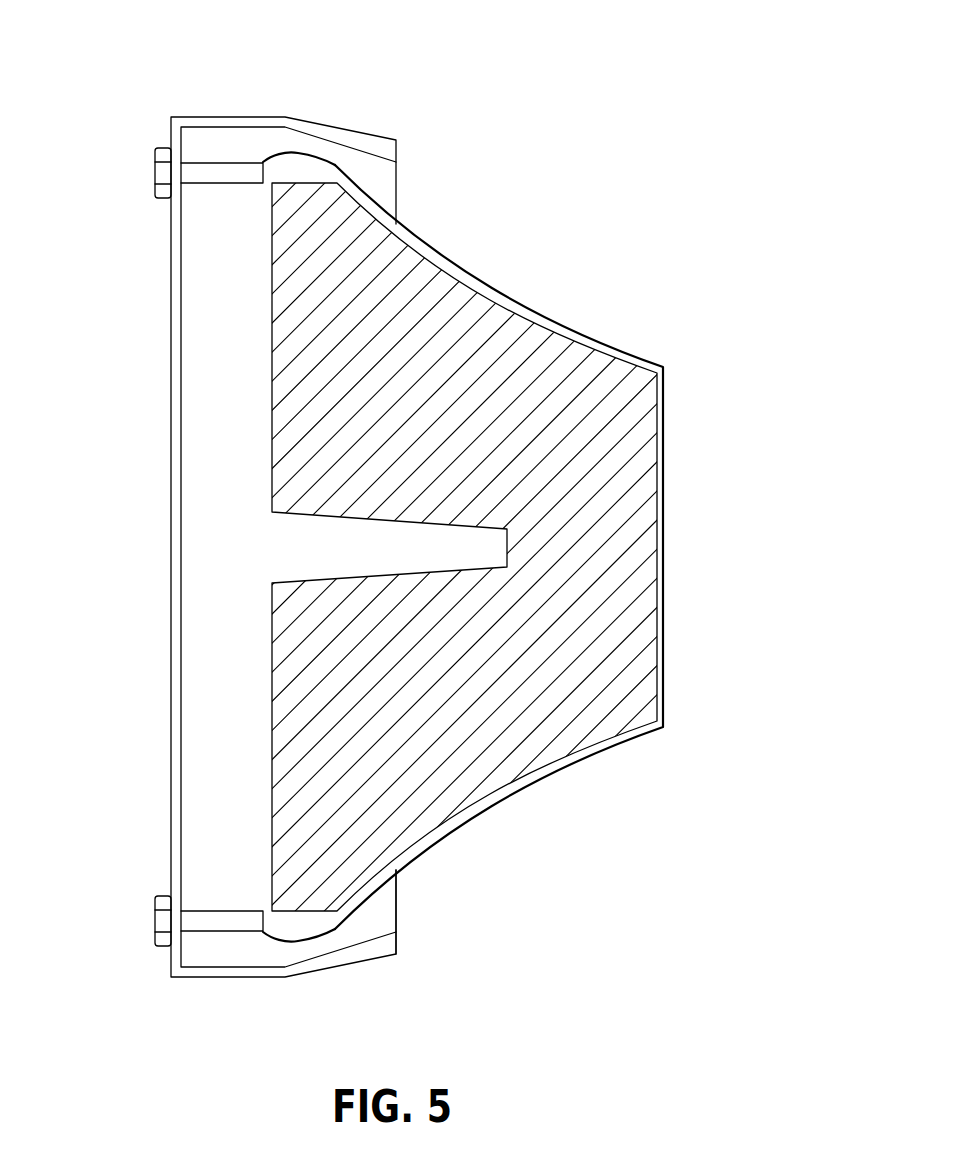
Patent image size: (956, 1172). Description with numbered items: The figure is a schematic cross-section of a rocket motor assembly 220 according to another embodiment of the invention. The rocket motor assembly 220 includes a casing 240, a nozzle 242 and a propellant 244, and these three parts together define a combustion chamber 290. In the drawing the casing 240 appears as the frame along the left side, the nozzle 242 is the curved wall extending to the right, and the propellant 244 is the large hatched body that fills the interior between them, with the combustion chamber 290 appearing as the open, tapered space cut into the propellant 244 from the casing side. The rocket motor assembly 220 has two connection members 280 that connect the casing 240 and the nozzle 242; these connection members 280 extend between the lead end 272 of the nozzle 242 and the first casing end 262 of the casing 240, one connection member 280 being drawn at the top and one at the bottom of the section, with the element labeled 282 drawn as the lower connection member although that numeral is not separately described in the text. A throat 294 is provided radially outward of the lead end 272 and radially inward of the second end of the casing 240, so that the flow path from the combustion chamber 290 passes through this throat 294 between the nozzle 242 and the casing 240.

The rocket motor assembly 220 is at (615, 86).
The casing 240 is at (172, 677).
The nozzle 242 is at (542, 315).
The propellant 244 is at (642, 627).
The first casing end 262 is at (150, 835).
The lead end 272 is at (320, 942).
The connection members 280 is at (215, 175).
The second flange 282 is at (222, 922).
The combustion chamber 290 is at (208, 560).
The throat 294 is at (385, 917).